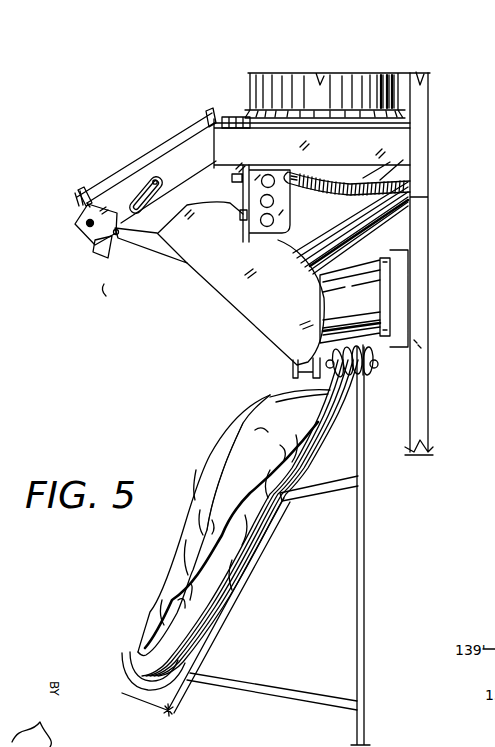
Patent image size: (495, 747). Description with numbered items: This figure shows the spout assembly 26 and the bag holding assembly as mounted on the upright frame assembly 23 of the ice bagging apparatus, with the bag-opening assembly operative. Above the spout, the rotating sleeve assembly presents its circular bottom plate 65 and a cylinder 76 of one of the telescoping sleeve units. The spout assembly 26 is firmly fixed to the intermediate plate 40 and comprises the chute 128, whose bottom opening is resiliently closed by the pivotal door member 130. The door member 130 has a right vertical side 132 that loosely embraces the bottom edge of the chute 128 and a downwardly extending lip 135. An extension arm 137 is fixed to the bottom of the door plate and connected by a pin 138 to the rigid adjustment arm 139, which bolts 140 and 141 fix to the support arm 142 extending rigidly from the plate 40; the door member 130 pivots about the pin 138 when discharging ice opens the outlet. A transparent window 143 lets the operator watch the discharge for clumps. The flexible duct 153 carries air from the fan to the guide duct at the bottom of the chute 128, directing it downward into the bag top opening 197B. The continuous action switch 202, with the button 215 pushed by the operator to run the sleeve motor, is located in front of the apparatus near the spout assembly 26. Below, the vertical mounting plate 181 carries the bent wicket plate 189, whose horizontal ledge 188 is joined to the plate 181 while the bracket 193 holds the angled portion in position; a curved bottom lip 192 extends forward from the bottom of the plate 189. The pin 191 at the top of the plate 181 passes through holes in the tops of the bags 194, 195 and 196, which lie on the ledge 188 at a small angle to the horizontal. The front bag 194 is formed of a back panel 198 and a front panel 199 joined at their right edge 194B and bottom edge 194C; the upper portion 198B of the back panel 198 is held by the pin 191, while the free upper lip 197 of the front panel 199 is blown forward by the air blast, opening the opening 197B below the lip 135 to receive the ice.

The frame assembly 23 is at (432, 184).
The spout assembly 26 is at (228, 403).
The intermediate plate 40 is at (392, 148).
The bottom plate 65 is at (227, 117).
The cylinder 76 is at (342, 82).
The chute 128 is at (352, 238).
The door member 130 is at (241, 283).
The right vertical side 132 is at (275, 331).
The lip 135 is at (293, 373).
The extension arm 137 is at (152, 247).
The pin 138 is at (117, 235).
The adjustment arm 139 is at (128, 222).
The bolt 140 is at (160, 177).
The bolt 141 is at (140, 208).
The support arm 142 is at (197, 148).
The transparent window 143 is at (88, 190).
The flexible duct 153 is at (324, 311).
The mounting plate 181 is at (358, 578).
The ledge 188 is at (307, 488).
The wicket plate 189 is at (212, 621).
The pin 191 is at (376, 368).
The bottom lip 192 is at (122, 693).
The bracket 193 is at (323, 700).
The bag 194 is at (318, 426).
The right edge 194B is at (177, 582).
The bottom edge 194C is at (140, 656).
The bag 195 is at (326, 440).
The bag 196 is at (330, 460).
The lip 197 is at (235, 410).
The opening 197B is at (322, 402).
The back panel 198 is at (212, 526).
The upper portion 198B is at (325, 392).
The front panel 199 is at (234, 523).
The continuous action switch 202 is at (238, 176).
The button 215 is at (240, 214).